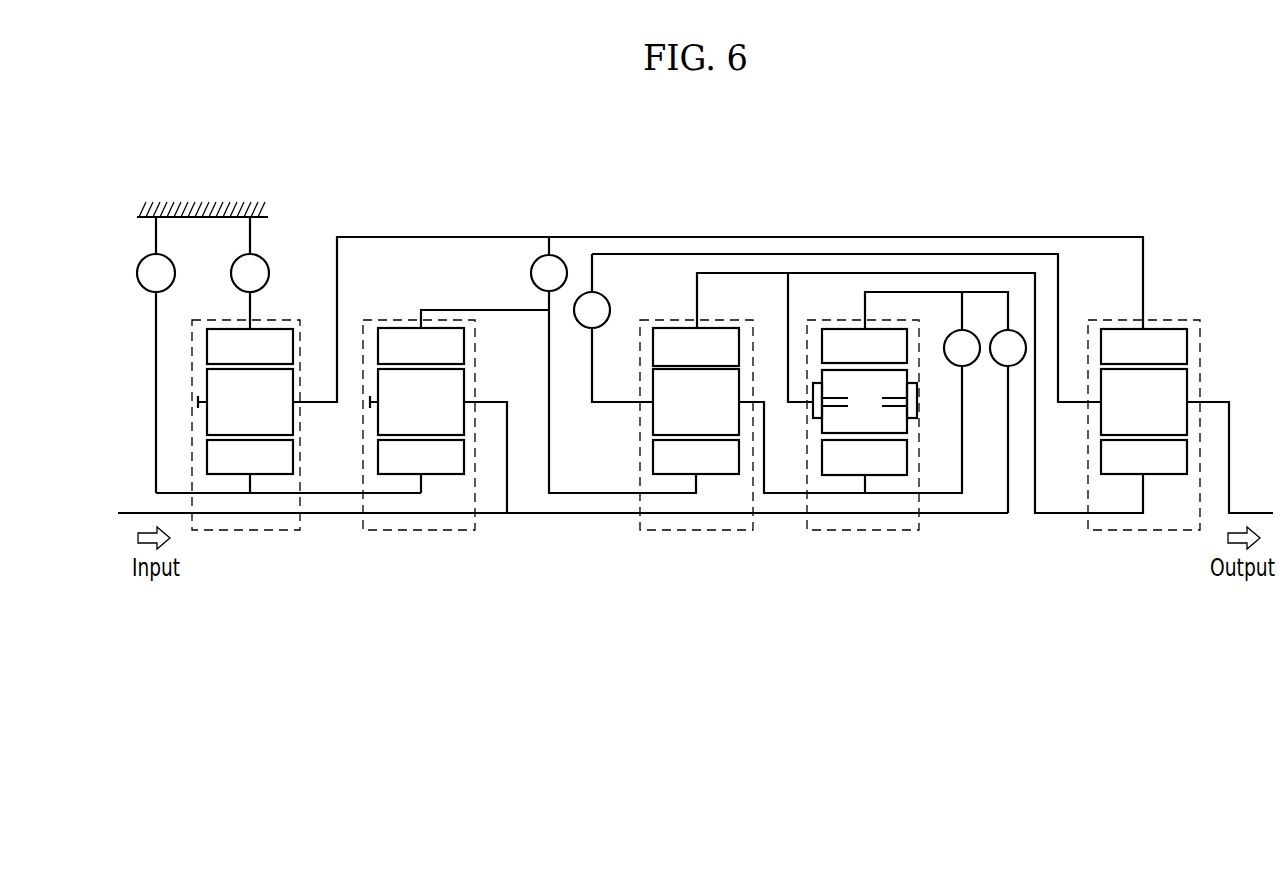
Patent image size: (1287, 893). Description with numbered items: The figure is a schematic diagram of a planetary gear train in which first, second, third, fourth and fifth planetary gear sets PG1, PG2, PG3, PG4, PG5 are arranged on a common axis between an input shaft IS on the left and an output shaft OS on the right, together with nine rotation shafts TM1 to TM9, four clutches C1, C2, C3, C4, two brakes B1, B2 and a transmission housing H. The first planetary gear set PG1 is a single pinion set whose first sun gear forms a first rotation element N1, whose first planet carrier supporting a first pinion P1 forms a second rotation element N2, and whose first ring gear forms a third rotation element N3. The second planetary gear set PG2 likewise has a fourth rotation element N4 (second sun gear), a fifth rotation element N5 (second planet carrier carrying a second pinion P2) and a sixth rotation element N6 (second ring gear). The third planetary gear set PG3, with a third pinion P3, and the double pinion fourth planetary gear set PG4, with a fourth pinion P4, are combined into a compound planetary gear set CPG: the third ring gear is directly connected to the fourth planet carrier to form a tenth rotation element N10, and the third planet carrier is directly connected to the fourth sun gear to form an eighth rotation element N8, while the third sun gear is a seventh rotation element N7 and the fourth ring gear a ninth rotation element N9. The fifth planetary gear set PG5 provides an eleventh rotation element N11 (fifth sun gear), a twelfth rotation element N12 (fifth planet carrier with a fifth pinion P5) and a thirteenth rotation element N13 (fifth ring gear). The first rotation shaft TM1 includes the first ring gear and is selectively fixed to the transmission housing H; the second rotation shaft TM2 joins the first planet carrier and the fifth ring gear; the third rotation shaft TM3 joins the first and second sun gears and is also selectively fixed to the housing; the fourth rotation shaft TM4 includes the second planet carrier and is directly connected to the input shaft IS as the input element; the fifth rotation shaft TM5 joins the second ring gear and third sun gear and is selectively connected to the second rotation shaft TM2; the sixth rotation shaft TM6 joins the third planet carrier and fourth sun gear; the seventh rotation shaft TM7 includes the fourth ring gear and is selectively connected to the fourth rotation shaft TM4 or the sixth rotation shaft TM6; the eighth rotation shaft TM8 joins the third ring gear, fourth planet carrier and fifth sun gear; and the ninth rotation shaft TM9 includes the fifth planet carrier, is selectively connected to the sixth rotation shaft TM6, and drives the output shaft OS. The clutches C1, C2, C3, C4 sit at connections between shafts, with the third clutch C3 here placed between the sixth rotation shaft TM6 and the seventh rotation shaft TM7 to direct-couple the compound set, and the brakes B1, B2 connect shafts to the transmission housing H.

The transmission housing H is at (212, 216).
The first brake B1 is at (156, 355).
The second brake B2 is at (250, 273).
The first clutch C1 is at (1008, 421).
The second clutch C2 is at (613, 328).
The third clutch C3 is at (962, 348).
The fourth clutch C4 is at (558, 365).
The first rotation shaft TM1 is at (250, 303).
The second rotation shaft TM2 is at (578, 236).
The third rotation shaft TM3 is at (342, 495).
The fourth rotation shaft TM4 is at (506, 459).
The fifth rotation shaft TM5 is at (563, 495).
The sixth rotation shaft TM6 is at (779, 495).
The seventh rotation shaft TM7 is at (912, 291).
The eighth rotation shaft TM8 is at (998, 272).
The ninth rotation shaft TM9 is at (1064, 274).
The first planetary gear set PG1 is at (247, 534).
The second planetary gear set PG2 is at (416, 534).
The third planetary gear set PG3 is at (695, 534).
The fourth planetary gear set PG4 is at (865, 534).
The fifth planetary gear set PG5 is at (1141, 534).
The compound planetary gear set CPG is at (872, 613).
The first pinion P1 is at (245, 402).
The second pinion P2 is at (417, 402).
The third pinion P3 is at (696, 402).
The fourth pinion P4 is at (865, 401).
The fifth pinion P5 is at (1144, 402).
The first rotation element N1 is at (250, 457).
The second rotation element N2 is at (320, 405).
The third rotation element N3 is at (250, 346).
The fourth rotation element N4 is at (421, 457).
The fifth rotation element N5 is at (488, 398).
The sixth rotation element N6 is at (421, 346).
The seventh rotation element N7 is at (696, 457).
The eighth rotation element N8 is at (614, 430).
The ninth rotation element N9 is at (864, 346).
The tenth rotation element N10 is at (933, 430).
The eleventh rotation element N11 is at (1144, 457).
The twelfth rotation element N12 is at (1078, 404).
The thirteenth rotation element N13 is at (1144, 346).
The input shaft IS is at (317, 515).
The output shaft OS is at (1243, 511).